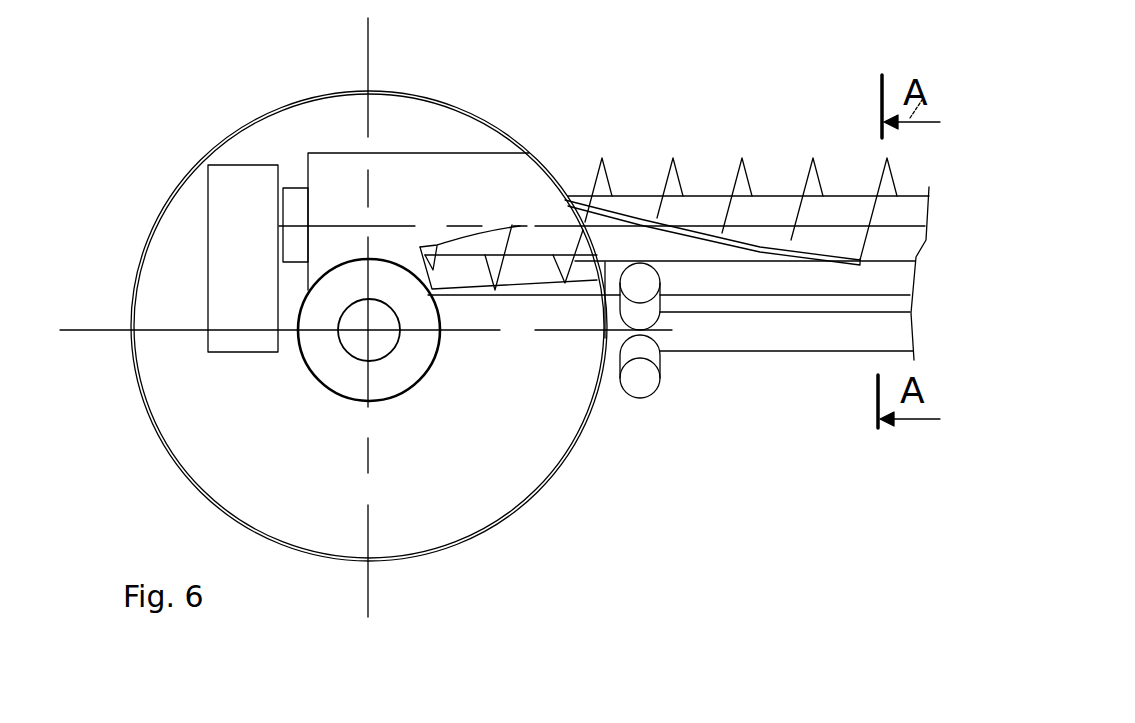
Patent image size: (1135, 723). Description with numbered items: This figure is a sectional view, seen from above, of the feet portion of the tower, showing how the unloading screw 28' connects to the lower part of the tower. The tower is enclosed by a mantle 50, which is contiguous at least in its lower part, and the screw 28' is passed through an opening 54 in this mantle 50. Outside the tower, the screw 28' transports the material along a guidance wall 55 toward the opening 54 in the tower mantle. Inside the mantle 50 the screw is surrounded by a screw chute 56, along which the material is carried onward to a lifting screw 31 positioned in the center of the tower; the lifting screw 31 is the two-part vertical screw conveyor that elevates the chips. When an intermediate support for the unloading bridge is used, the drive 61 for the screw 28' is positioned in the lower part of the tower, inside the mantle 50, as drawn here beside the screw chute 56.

The mantle 50 is at (423, 96).
The drive 61 is at (241, 178).
The screw chute 56 is at (460, 170).
The opening 54 is at (543, 153).
The lifting screw 31 is at (392, 380).
The screw 28' is at (748, 184).
The guidance wall 55 is at (770, 240).